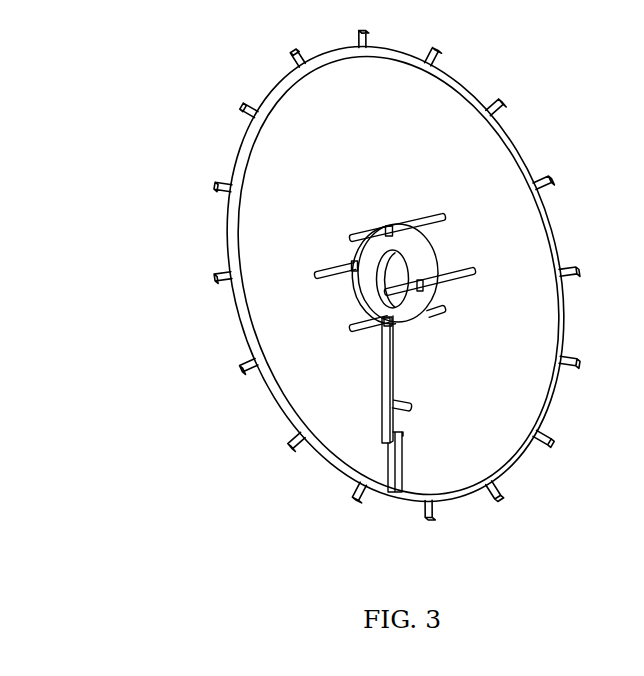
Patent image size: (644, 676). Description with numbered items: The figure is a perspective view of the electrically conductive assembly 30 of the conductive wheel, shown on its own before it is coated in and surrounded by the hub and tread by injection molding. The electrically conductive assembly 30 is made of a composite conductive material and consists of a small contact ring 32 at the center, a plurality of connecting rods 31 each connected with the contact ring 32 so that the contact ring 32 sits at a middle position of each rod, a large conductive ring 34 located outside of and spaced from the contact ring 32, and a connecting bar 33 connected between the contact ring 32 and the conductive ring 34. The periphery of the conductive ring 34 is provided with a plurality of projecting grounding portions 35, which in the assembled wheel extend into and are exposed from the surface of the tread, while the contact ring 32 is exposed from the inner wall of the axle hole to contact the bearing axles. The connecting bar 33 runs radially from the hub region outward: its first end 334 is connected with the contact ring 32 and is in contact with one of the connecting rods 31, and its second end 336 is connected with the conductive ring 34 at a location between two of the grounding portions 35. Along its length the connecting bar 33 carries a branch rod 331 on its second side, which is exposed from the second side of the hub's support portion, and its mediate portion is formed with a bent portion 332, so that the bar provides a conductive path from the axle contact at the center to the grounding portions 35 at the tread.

The electrically conductive assembly 30 is at (208, 324).
The connecting rods 31 is at (334, 268).
The contact ring 32 is at (362, 291).
The connecting bar 33 is at (392, 361).
The branch rod 331 is at (410, 407).
The bent portion 332 is at (403, 435).
The first end 334 is at (392, 324).
The conductive ring 34 is at (235, 230).
The grounding portions 35 is at (246, 367).
The second end 336 is at (357, 489).